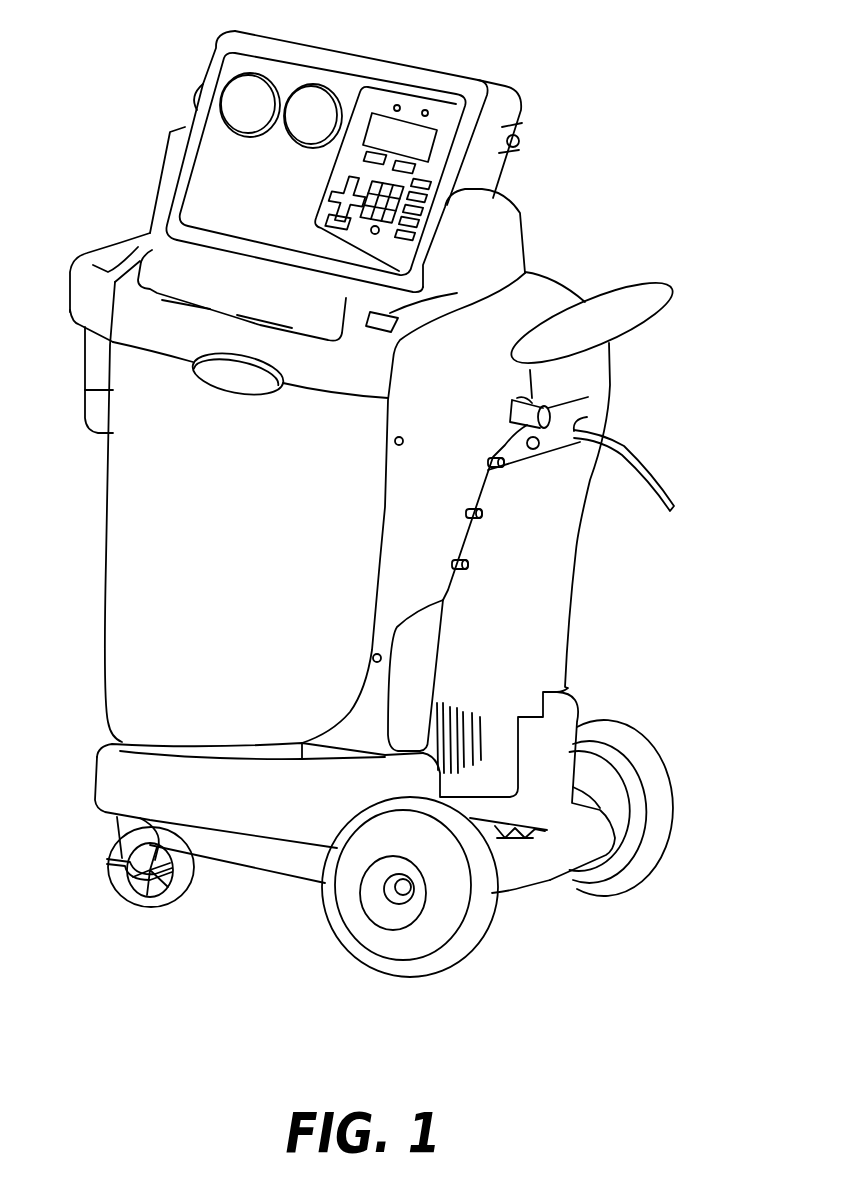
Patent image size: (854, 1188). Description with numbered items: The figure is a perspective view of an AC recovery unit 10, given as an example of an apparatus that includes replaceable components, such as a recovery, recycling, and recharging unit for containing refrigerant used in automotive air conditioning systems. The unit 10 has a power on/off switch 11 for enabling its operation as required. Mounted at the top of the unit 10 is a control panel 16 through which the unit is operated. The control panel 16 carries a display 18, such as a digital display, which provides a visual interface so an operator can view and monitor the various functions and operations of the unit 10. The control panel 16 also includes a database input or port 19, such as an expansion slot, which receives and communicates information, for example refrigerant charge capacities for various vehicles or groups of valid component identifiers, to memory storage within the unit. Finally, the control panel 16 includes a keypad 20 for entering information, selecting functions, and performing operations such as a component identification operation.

The AC recovery unit 10 is at (138, 634).
The power on/off switch 11 is at (457, 293).
The control panel 16 is at (460, 117).
The display 18 is at (413, 133).
The database input port 19 is at (521, 142).
The keypad 20 is at (333, 160).